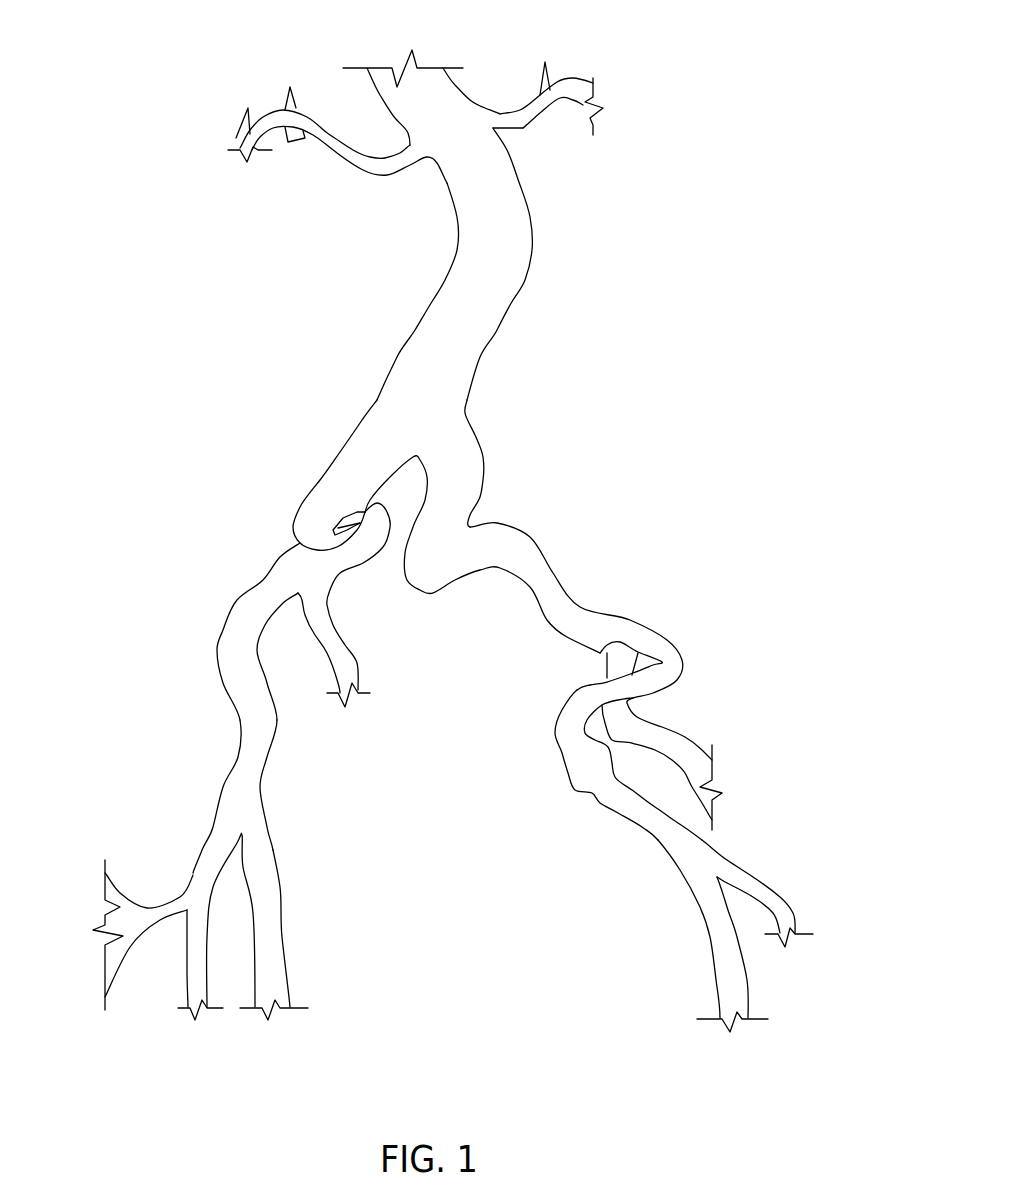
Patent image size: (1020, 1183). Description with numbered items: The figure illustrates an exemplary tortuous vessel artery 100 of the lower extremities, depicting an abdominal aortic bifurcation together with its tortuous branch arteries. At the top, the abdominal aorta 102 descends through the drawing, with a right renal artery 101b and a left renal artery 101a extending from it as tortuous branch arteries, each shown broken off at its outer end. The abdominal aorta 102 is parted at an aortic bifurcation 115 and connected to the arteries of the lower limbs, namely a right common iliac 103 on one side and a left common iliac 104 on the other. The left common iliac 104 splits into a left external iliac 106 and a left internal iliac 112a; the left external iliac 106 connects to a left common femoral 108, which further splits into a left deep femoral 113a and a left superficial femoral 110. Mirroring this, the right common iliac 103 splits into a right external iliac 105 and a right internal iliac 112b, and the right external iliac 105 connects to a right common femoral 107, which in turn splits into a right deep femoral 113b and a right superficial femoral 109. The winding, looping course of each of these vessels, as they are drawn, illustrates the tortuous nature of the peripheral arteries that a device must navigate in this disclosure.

The tortuous vessel artery 100 is at (428, 38).
The left renal artery 101a is at (525, 128).
The right renal artery 101b is at (373, 177).
The abdominal aorta 102 is at (533, 240).
The right common iliac 103 is at (320, 480).
The left common iliac 104 is at (487, 473).
The right external iliac 105 is at (217, 657).
The left external iliac 106 is at (682, 657).
The right common femoral 107 is at (267, 763).
The left common femoral 108 is at (643, 823).
The right superficial femoral 109 is at (283, 895).
The left superficial femoral 110 is at (707, 940).
The left internal iliac 112a is at (712, 747).
The right internal iliac 112b is at (358, 658).
The left deep femoral 113a is at (740, 867).
The right deep femoral 113b is at (187, 877).
The aortic bifurcation 115 is at (410, 452).